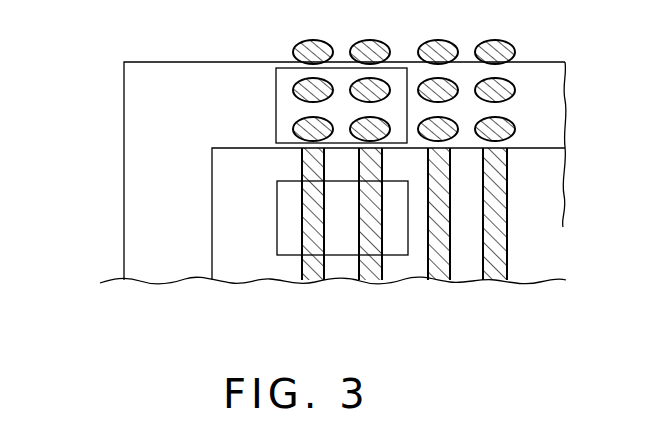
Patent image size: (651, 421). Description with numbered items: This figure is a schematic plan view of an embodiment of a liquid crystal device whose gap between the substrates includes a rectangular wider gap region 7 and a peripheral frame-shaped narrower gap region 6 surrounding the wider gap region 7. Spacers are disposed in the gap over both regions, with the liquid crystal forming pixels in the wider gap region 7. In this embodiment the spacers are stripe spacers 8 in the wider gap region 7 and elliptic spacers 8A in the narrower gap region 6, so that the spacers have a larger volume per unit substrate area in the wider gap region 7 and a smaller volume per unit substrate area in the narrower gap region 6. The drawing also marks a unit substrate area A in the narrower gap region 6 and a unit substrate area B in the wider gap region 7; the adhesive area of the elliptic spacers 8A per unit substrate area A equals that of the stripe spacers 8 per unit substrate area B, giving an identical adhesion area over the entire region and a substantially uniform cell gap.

The narrower gap region 6 is at (134, 116).
The wider gap region 7 is at (220, 174).
The stripe spacers 8 is at (306, 270).
The elliptic spacers 8A is at (296, 89).
The unit substrate area A is at (281, 108).
The unit substrate area B is at (284, 218).